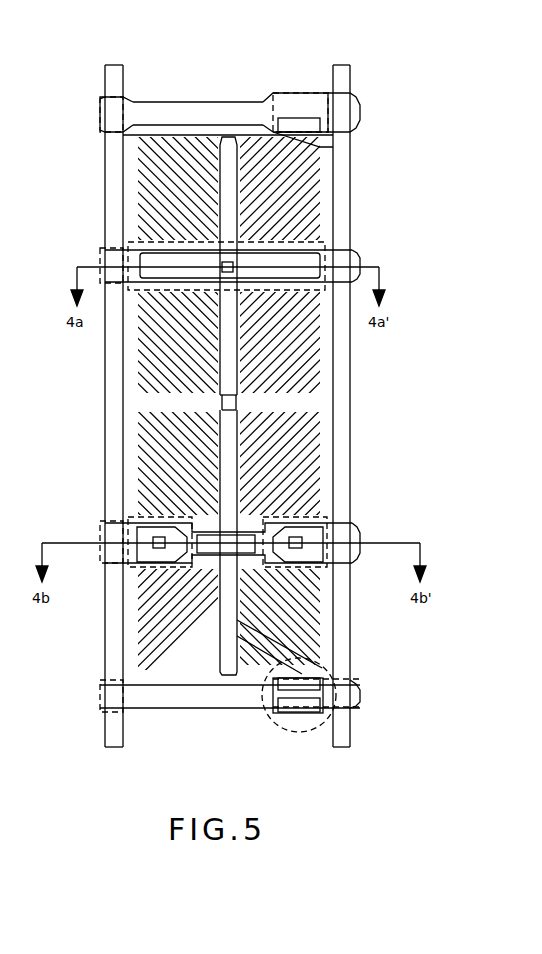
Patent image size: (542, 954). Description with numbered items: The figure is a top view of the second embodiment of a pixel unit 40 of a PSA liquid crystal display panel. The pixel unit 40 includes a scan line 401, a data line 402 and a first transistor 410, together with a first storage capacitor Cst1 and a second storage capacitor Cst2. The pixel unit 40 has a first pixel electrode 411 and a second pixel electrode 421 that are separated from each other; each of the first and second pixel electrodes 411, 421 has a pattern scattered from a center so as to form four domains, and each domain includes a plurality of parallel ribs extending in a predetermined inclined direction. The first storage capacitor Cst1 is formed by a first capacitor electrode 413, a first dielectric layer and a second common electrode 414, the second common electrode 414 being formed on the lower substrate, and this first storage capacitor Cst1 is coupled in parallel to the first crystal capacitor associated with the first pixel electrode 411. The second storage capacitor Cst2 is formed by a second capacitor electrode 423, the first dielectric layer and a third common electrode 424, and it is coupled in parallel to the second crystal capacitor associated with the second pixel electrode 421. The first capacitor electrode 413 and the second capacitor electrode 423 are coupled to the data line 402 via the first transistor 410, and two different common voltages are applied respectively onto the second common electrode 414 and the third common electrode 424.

The pixel unit 40 is at (418, 70).
The scan line 401 is at (190, 702).
The data line 402 is at (347, 641).
The first transistor 410 is at (300, 732).
The first pixel electrode 411 is at (310, 206).
The first capacitor electrode 413 is at (127, 243).
The second common electrode 414 is at (330, 258).
The second pixel electrode 421 is at (312, 418).
The second capacitor electrode 423 is at (127, 570).
The third common electrode 424 is at (353, 533).
The first storage capacitor Cst1 is at (310, 229).
The second storage capacitor Cst2 is at (130, 518).